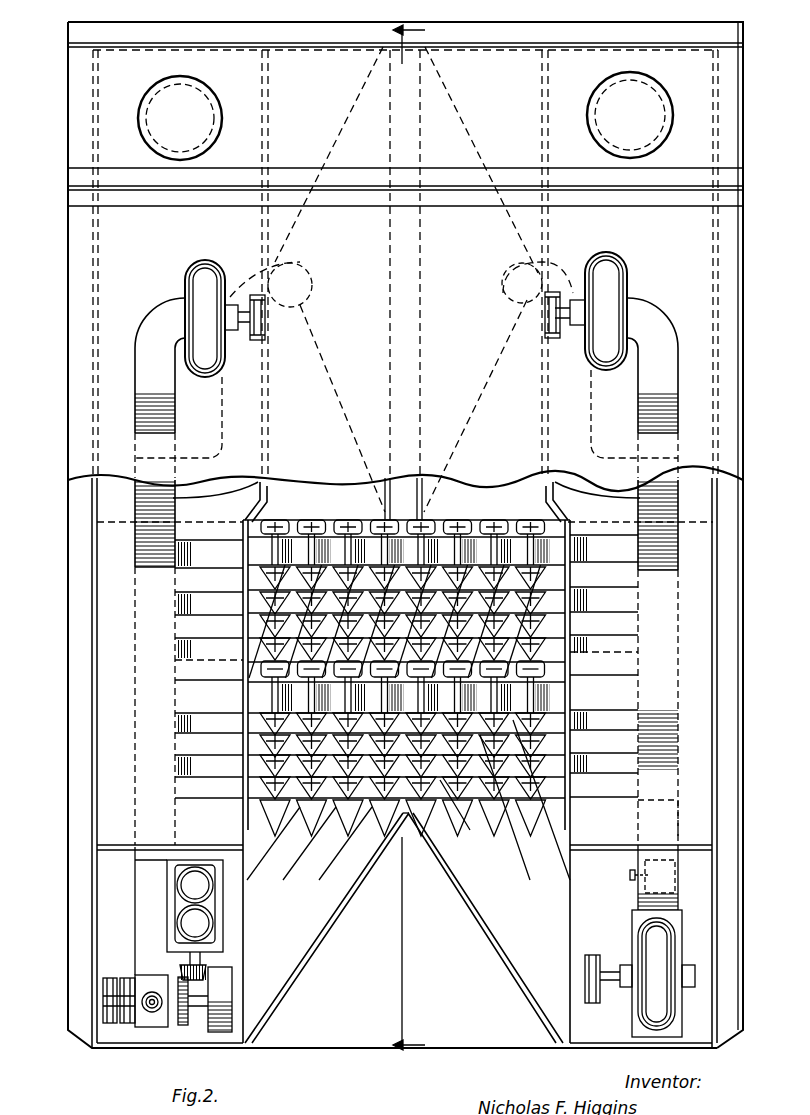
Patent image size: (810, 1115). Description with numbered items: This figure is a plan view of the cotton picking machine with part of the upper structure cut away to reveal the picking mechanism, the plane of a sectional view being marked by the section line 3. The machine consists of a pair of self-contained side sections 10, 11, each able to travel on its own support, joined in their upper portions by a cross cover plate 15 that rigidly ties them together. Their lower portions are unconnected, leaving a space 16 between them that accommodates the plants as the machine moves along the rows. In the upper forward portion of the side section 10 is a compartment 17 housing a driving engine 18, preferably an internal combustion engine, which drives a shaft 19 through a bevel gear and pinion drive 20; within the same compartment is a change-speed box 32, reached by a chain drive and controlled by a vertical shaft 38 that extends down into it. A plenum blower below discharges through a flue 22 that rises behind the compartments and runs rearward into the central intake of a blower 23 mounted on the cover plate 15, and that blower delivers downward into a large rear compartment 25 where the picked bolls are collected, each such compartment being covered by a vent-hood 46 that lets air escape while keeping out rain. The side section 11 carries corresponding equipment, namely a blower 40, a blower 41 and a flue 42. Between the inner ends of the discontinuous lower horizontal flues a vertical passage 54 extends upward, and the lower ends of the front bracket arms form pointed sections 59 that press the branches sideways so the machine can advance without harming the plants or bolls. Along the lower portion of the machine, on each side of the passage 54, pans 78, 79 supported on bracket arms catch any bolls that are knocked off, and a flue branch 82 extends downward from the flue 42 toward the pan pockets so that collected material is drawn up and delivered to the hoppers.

The section line 3- 3 is at (416, 540).
The side section 10 is at (90, 612).
The side section 11 is at (716, 652).
The cross cover plate 15 is at (405, 432).
The space 16 is at (363, 922).
The compartment 17 is at (120, 865).
The driving engine 18 is at (166, 893).
The shaft 19 is at (200, 1005).
The bevel gear and pinion drive 20 is at (183, 972).
The flue 22 is at (137, 828).
The blower 23 is at (203, 268).
The compartment 25 is at (268, 480).
The change-speed box 32 is at (148, 1018).
The vertical shaft 38 is at (155, 1012).
The blower 40 is at (642, 946).
The blower 41 is at (628, 282).
The flue 42 is at (634, 571).
The vent-hood 46 is at (405, 116).
The vertical passage 54 is at (408, 820).
The pointed section 59 is at (350, 847).
The pan 78 is at (388, 240).
The pan 79 is at (425, 280).
The flue branch 82 is at (292, 264).